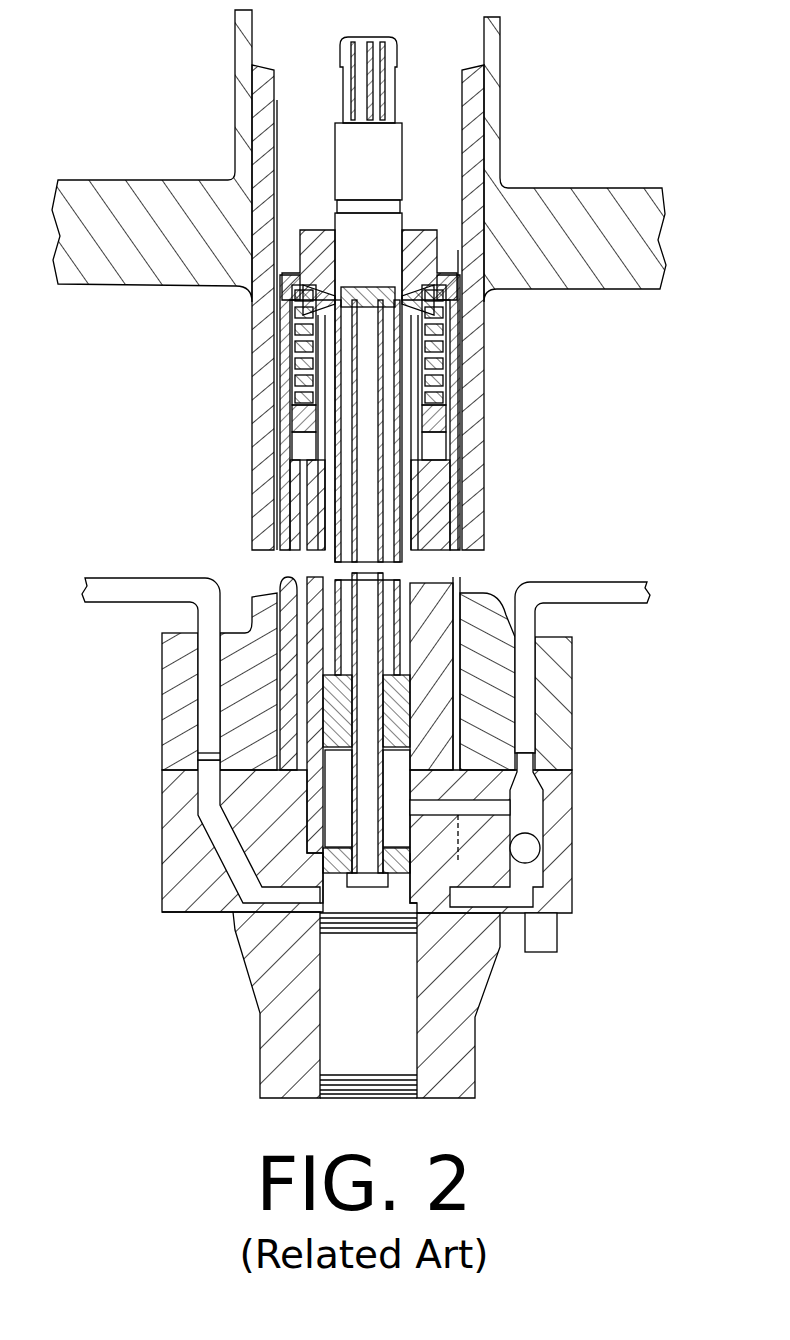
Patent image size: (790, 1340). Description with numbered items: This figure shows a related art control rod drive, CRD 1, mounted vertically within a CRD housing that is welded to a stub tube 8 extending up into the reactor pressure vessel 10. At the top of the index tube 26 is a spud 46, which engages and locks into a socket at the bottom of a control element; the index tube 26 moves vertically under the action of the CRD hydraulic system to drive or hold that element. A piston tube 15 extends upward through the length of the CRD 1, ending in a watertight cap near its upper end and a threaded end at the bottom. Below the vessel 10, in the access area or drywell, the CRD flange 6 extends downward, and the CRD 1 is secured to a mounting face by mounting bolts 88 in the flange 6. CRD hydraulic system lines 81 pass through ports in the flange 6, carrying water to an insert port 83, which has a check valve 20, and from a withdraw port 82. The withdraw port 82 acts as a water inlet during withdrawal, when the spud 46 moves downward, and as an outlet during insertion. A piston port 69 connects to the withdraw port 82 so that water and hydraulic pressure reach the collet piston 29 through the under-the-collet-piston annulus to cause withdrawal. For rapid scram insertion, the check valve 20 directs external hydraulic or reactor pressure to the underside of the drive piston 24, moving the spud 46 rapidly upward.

The CRD 1 is at (641, 402).
The CRD flange 6 is at (475, 1047).
The stub tube 8 is at (500, 103).
The reactor pressure vessel 10 is at (167, 182).
The piston tube 15 is at (383, 495).
The check valve 20 is at (543, 822).
The drive piston 24 is at (413, 717).
The index tube 26 is at (400, 530).
The collet piston 29 is at (293, 424).
The spud 46 is at (400, 67).
The piston port 69 is at (250, 907).
The CRD hydraulic system lines 81 is at (118, 578).
The withdraw port 82 is at (207, 788).
The insert port 83 is at (533, 762).
The mounting bolts 88 is at (538, 937).